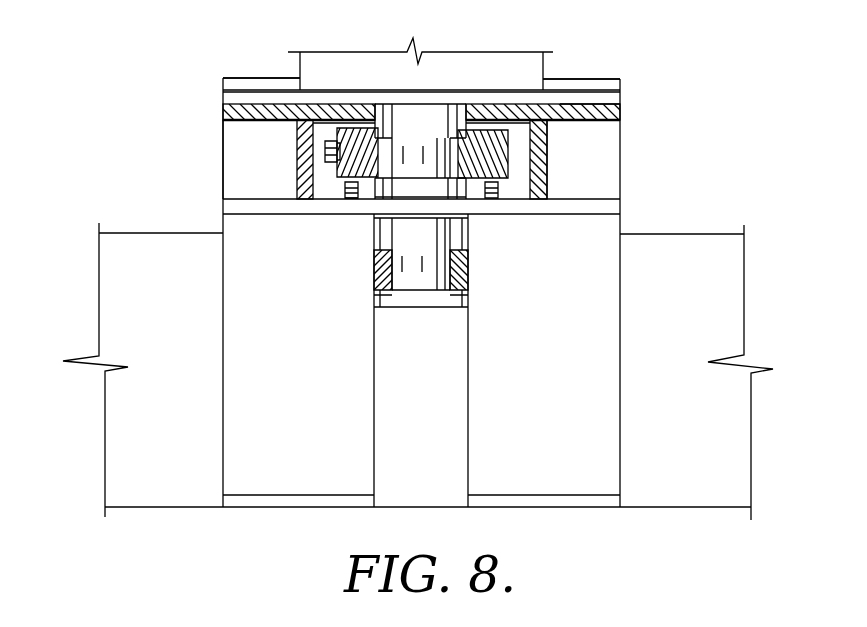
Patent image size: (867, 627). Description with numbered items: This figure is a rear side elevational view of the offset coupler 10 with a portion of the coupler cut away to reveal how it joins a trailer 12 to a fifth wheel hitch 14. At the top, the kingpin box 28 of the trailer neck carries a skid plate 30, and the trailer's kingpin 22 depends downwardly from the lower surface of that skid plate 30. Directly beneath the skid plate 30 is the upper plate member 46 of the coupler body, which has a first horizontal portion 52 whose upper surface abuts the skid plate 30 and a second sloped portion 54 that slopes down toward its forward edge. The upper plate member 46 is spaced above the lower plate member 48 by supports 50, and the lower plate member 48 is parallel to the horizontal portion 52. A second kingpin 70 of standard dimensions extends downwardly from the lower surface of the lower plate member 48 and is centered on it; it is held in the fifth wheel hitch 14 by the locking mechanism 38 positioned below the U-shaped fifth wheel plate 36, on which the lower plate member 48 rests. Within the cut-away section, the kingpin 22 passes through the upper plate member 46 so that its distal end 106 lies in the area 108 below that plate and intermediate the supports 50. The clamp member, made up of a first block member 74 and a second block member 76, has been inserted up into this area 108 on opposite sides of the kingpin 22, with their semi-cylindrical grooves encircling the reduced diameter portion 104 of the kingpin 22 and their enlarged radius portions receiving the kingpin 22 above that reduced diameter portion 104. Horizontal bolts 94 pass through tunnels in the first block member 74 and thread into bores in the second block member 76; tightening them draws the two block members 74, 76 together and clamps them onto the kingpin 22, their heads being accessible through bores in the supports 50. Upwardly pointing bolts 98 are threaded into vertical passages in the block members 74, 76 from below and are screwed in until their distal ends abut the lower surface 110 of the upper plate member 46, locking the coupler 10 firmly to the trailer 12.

The offset coupler 10 is at (617, 149).
The trailer 12 is at (537, 53).
The fifth wheel hitch 14 is at (684, 240).
The kingpin 22 is at (420, 112).
The kingpin box 28 is at (328, 53).
The skid plate 30 is at (228, 90).
The fifth wheel plate 36 is at (240, 300).
The locking mechanism 38 is at (375, 289).
The upper plate member 46 is at (617, 112).
The lower plate member 48 is at (228, 203).
The supports 50 is at (306, 130).
The first horizontal portion 52 is at (228, 112).
The second sloped portion 54 is at (228, 158).
The kingpin 70 is at (468, 290).
The first block member 74 is at (338, 180).
The second block member 76 is at (503, 178).
The bolts 94 is at (325, 152).
The bolts 98 is at (350, 199).
The reduced diameter portion 104 is at (472, 177).
The distal end 106 is at (382, 199).
The area 108 is at (525, 173).
The lower surface 110 is at (540, 135).